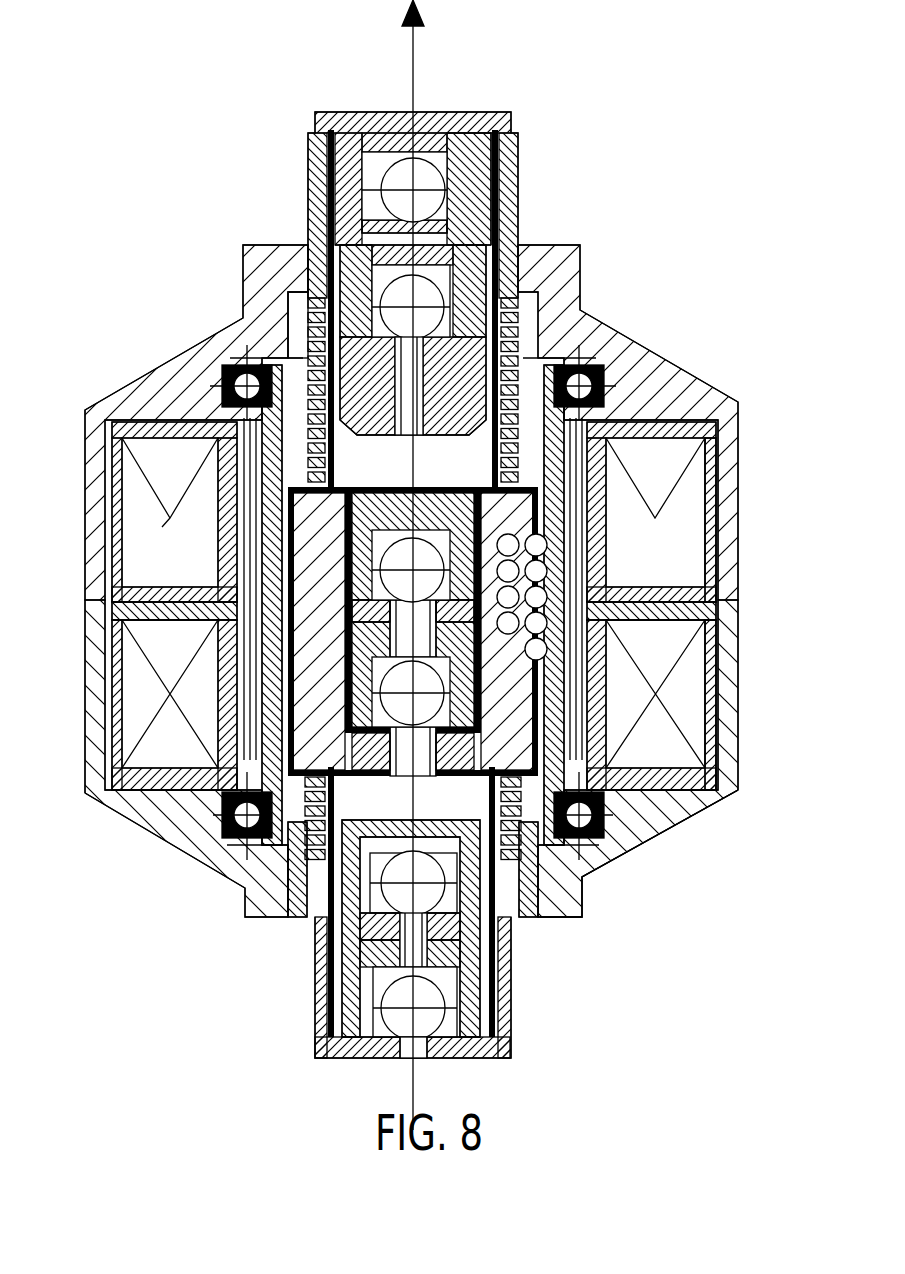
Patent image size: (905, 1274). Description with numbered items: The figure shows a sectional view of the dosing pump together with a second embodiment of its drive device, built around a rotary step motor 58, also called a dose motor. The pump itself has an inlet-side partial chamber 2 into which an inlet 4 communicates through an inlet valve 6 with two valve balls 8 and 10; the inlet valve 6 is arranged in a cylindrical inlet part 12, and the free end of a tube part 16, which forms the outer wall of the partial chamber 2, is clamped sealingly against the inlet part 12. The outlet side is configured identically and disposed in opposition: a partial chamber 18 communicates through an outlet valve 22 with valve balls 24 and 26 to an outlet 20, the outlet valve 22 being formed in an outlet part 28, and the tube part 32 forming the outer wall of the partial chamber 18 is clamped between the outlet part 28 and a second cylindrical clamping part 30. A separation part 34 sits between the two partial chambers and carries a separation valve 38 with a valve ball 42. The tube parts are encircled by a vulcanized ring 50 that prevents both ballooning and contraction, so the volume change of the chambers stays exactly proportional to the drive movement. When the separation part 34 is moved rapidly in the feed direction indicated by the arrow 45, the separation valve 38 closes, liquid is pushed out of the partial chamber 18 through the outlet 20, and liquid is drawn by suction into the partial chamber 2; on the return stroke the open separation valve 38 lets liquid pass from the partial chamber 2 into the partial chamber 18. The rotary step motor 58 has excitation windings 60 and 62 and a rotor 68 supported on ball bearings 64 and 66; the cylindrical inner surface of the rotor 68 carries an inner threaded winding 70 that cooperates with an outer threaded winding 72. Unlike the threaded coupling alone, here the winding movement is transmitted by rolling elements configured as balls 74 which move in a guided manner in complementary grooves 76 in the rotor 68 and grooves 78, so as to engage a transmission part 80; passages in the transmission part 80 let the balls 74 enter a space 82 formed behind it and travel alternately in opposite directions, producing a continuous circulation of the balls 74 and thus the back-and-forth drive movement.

The partial chamber 2 is at (416, 815).
The inlet 4 is at (420, 1057).
The inlet valve 6 is at (495, 1015).
The valve ball 8 is at (490, 952).
The valve ball 10 is at (493, 977).
The inlet part 12 is at (513, 1057).
The tube part 16 is at (318, 993).
The partial chamber 18 is at (387, 476).
The outlet 20 is at (415, 113).
The outlet valve 22 is at (520, 146).
The valve ball 24 is at (404, 187).
The valve ball 26 is at (513, 230).
The outlet part 28 is at (484, 113).
The second cylindrical clamping part 30 is at (522, 183).
The tube part 32 is at (307, 173).
The separation part 34 is at (590, 712).
The separation valve 38 is at (405, 527).
The valve ball 42 is at (411, 692).
The arrow (feed direction) 45 is at (415, 48).
The ring 50 is at (297, 330).
The rotary step motor 58 is at (680, 363).
The excitation winding 60 is at (697, 500).
The excitation winding 62 is at (697, 690).
The ball bearing 64 is at (622, 345).
The ball bearing 66 is at (632, 850).
The rotor 68 is at (213, 417).
The inner threaded winding 70 is at (610, 488).
The outer threaded winding 72 is at (213, 583).
The balls 74 is at (608, 532).
The grooves 76 is at (268, 520).
The grooves 78 is at (500, 552).
The transmission part 80 is at (585, 720).
The space 82 is at (411, 566).